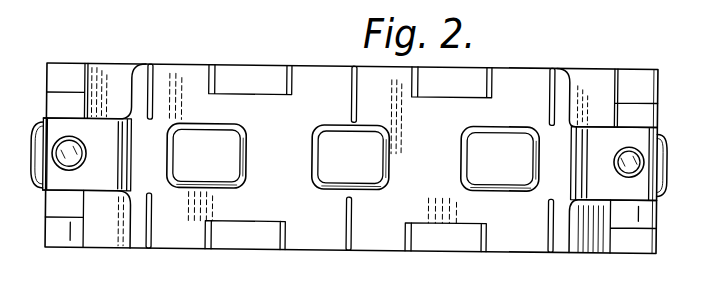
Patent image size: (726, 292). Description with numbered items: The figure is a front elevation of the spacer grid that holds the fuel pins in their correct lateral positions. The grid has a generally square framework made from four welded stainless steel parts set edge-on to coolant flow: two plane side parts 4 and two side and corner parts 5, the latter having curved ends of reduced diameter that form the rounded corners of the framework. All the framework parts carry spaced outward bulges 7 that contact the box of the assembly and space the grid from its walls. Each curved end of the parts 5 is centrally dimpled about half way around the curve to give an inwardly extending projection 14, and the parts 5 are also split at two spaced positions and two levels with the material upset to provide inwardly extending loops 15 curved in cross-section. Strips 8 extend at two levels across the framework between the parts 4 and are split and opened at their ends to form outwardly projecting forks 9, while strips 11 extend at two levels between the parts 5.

The plane side parts 4 is at (47, 78).
The side and corner parts 5 is at (460, 140).
The outward bulges 7 is at (38, 138).
The strips 8 is at (104, 70).
The forks 9 is at (67, 110).
The strips 11 is at (352, 86).
The inwardly extending projection 14 is at (84, 160).
The inwardly extending loops 15 is at (238, 75).